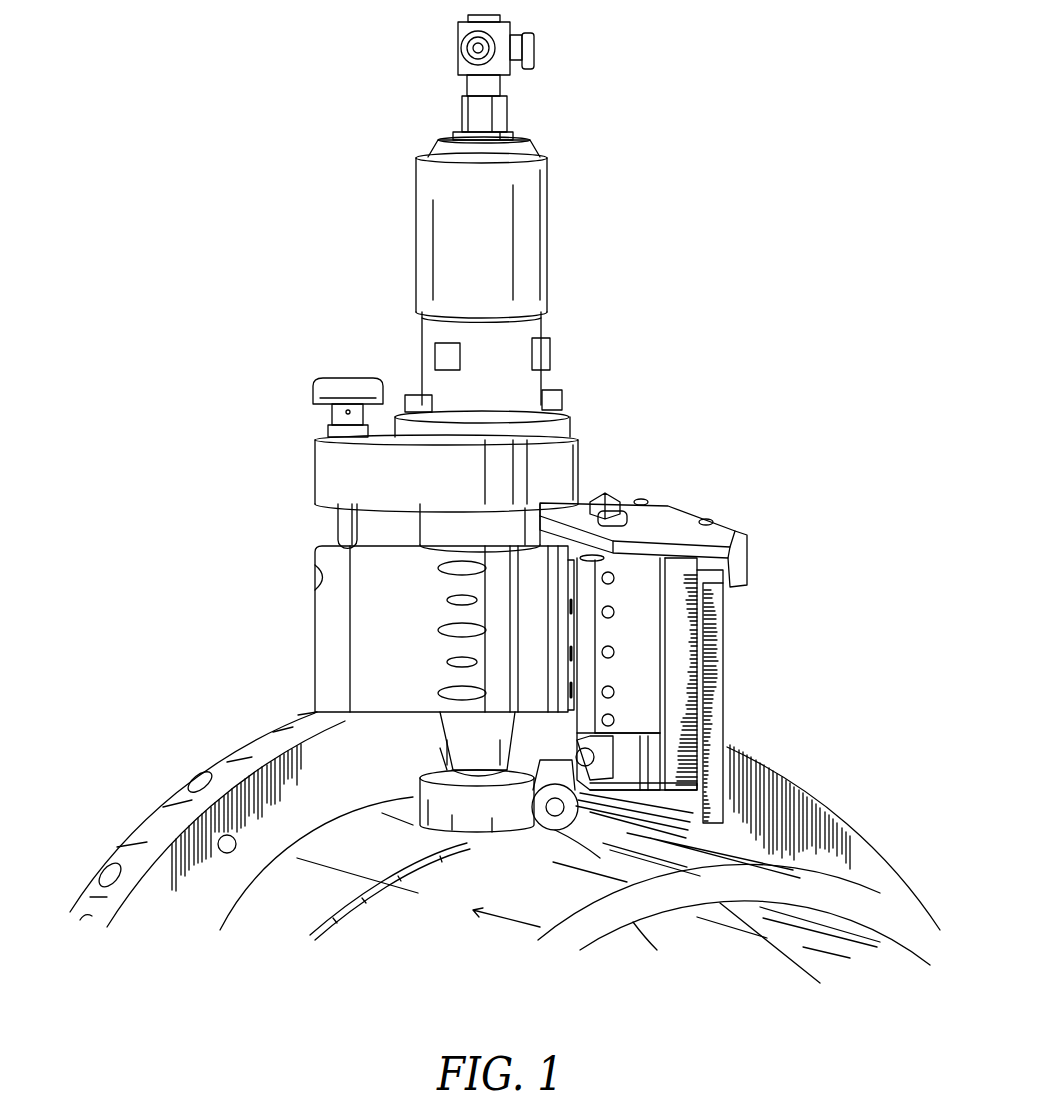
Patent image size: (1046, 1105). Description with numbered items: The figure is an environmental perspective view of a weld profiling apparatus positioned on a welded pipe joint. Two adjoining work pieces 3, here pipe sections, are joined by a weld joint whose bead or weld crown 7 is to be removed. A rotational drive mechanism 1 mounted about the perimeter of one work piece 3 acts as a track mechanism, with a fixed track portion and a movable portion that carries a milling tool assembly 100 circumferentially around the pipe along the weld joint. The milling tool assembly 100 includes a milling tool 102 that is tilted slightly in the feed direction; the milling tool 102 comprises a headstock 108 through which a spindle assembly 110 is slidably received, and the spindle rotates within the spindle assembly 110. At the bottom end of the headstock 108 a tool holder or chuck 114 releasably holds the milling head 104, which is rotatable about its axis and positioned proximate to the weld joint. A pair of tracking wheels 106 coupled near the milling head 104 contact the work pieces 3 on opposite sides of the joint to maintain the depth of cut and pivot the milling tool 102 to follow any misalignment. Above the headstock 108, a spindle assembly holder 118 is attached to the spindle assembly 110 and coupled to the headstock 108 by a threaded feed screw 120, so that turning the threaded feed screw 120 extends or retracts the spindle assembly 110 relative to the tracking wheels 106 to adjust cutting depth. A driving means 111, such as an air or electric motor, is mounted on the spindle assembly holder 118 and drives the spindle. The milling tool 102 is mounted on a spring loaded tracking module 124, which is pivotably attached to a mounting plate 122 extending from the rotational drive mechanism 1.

The rotational drive mechanism 1 is at (157, 806).
The work pieces 3 is at (380, 851).
The weld crown 7 is at (368, 898).
The milling tool assembly 100 is at (714, 390).
The milling tool 102 is at (315, 640).
The milling head 104 is at (513, 830).
The tracking wheels 106 is at (553, 835).
The headstock 108 is at (405, 715).
The spindle assembly 110 is at (405, 520).
The driving means 111 is at (548, 262).
The chuck 114 is at (437, 752).
The spindle assembly holder 118 is at (315, 463).
The threaded feed screw 120 is at (338, 517).
The mounting plate 122 is at (748, 718).
The spring loaded tracking module 124 is at (723, 645).